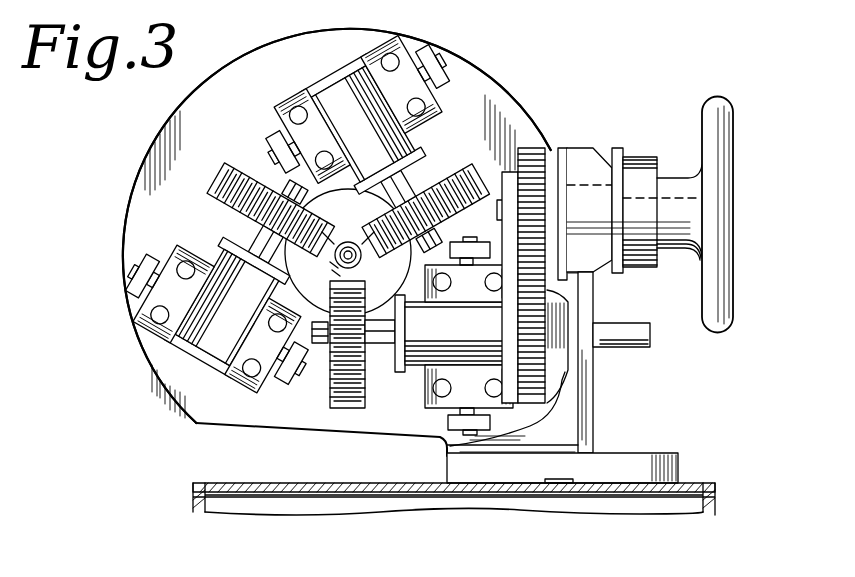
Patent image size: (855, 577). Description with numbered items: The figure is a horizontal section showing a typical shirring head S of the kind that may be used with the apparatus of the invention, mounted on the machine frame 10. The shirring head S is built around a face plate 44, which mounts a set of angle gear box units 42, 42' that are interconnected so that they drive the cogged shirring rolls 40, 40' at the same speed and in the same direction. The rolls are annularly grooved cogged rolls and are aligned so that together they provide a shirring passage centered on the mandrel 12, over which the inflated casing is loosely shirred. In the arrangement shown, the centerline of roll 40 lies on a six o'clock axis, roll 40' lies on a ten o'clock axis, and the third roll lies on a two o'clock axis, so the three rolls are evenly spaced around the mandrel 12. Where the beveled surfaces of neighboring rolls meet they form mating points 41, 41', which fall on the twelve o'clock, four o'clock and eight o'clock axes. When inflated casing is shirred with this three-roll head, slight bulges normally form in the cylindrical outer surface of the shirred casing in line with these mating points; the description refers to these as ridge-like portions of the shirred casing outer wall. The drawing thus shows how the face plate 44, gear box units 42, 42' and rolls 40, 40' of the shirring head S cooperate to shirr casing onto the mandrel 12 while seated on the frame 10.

The machine frame 10 is at (193, 497).
The mandrel 12 is at (348, 240).
The cogged shirring roll 40 is at (321, 373).
The cogged shirring roll 40' is at (253, 207).
The mating point 41 is at (318, 275).
The mating point 41' is at (338, 221).
The angle gear box unit 42 is at (412, 336).
The angle gear box unit 42' is at (236, 270).
The face plate 44 is at (124, 236).
The shirring head S is at (469, 52).